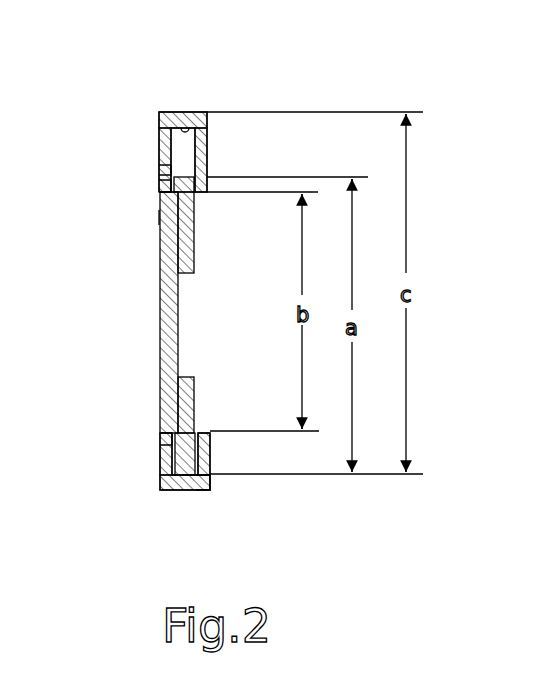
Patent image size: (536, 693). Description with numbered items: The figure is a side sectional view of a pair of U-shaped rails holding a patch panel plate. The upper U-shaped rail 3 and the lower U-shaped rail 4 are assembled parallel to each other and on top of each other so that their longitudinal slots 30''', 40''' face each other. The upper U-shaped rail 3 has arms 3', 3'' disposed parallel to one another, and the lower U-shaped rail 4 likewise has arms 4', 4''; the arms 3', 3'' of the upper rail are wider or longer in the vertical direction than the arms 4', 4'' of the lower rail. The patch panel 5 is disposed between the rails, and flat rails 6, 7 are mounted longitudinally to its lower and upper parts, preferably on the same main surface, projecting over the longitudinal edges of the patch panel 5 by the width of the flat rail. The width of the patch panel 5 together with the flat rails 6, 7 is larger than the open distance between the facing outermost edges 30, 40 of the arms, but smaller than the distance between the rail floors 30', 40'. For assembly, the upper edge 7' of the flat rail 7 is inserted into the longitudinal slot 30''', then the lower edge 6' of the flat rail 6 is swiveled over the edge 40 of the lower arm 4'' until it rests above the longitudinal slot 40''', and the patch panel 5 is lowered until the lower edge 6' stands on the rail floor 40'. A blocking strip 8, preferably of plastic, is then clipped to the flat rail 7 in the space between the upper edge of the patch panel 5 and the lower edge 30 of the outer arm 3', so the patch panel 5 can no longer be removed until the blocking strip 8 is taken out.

The upper U-shaped rail 3 is at (183, 105).
The rail floor 30' is at (205, 95).
The longitudinal slot 30''' is at (111, 156).
The arm 3'' is at (241, 160).
The arm 3' is at (121, 200).
The upper edge 7' is at (121, 169).
The blocking strip 8 is at (159, 217).
The patch panel 5 is at (159, 325).
The flat rail 7 is at (227, 232).
The outermost edge 30 is at (232, 200).
The flat rail 6 is at (227, 382).
The outermost edge 40 is at (233, 432).
The lower U-shaped rail 4 is at (192, 509).
The rail floor 40' is at (170, 519).
The longitudinal slot 40''' is at (123, 458).
The arm 4'' is at (244, 454).
The arm 4' is at (123, 412).
The lower edge 6' is at (239, 503).